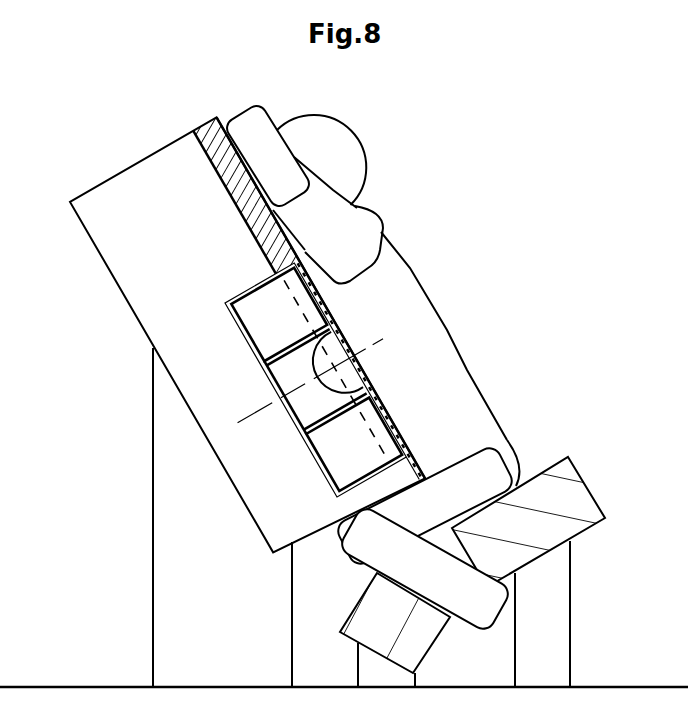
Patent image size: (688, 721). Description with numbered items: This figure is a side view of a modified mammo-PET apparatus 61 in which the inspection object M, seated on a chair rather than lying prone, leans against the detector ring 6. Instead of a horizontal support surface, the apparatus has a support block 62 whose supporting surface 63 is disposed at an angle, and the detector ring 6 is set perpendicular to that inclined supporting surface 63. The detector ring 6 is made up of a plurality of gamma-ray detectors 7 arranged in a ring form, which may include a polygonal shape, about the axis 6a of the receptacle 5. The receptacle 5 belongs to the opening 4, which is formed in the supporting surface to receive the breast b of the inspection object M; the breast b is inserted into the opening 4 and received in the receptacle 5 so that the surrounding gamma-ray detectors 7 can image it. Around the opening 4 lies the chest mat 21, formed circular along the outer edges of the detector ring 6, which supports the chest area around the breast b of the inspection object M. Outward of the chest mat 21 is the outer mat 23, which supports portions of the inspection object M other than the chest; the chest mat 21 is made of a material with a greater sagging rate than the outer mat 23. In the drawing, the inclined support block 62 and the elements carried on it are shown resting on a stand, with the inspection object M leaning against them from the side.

The support block 62 is at (105, 181).
The outer mat 23 is at (210, 131).
The supporting surface 63 is at (218, 162).
The mammo-PET apparatus 61 is at (433, 160).
The detector ring 6 is at (247, 288).
The gamma-ray detectors 7 is at (281, 330).
The receptacle 5 is at (273, 383).
The chest mat 21 is at (327, 303).
The opening 4 is at (353, 373).
The breast b is at (343, 350).
The axis 6a is at (244, 418).
The inspection object M is at (493, 610).